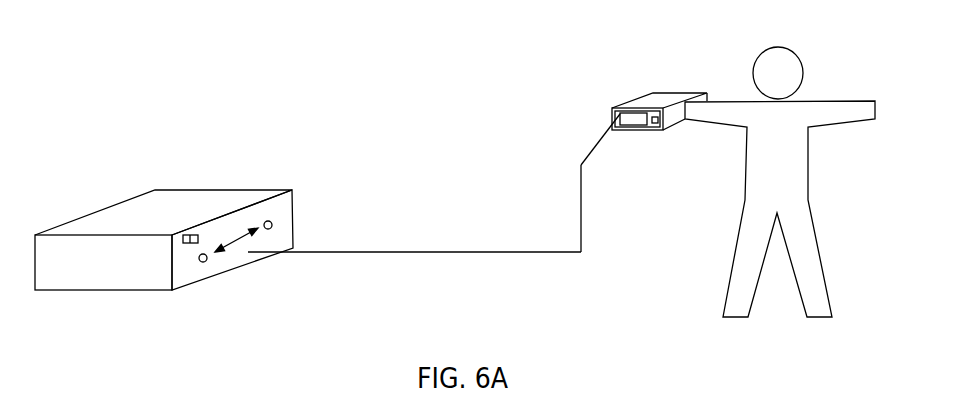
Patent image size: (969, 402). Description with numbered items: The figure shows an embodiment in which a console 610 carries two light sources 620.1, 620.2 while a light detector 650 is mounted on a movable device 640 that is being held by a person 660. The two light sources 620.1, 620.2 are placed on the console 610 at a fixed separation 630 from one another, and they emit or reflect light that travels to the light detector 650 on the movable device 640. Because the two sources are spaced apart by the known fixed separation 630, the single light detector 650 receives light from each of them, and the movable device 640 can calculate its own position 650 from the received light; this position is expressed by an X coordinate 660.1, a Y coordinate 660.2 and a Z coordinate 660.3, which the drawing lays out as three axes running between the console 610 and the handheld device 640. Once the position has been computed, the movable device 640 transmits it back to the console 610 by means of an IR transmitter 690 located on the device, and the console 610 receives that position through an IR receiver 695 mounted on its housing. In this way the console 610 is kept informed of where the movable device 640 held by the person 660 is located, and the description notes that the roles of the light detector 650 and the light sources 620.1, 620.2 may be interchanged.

The console 610 is at (201, 246).
The fixed separation S_L 630 is at (230, 210).
The first light source 620.1 is at (269, 221).
The second light source 620.2 is at (198, 258).
The IR receiver 695 is at (188, 234).
The light detector / position P(X,Y,Z) 650 is at (622, 115).
The X coordinate 660.1 is at (567, 135).
The Y coordinate 660.2 is at (585, 217).
The Z coordinate 660.3 is at (453, 253).
The movable device 640 is at (665, 111).
The IR transmitter 690 is at (665, 130).
The person 660 is at (777, 45).